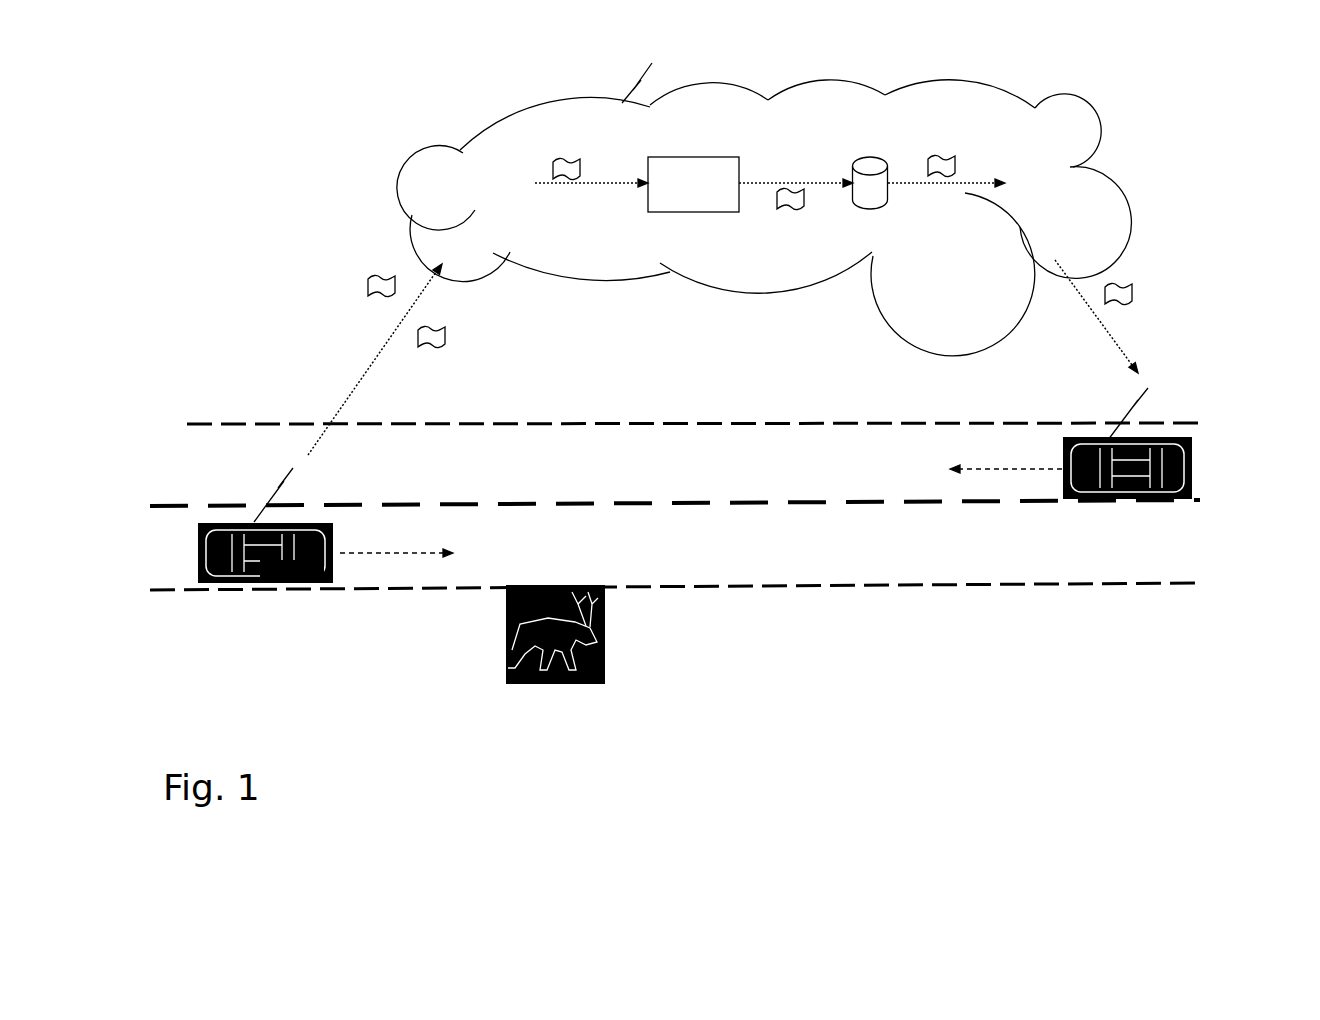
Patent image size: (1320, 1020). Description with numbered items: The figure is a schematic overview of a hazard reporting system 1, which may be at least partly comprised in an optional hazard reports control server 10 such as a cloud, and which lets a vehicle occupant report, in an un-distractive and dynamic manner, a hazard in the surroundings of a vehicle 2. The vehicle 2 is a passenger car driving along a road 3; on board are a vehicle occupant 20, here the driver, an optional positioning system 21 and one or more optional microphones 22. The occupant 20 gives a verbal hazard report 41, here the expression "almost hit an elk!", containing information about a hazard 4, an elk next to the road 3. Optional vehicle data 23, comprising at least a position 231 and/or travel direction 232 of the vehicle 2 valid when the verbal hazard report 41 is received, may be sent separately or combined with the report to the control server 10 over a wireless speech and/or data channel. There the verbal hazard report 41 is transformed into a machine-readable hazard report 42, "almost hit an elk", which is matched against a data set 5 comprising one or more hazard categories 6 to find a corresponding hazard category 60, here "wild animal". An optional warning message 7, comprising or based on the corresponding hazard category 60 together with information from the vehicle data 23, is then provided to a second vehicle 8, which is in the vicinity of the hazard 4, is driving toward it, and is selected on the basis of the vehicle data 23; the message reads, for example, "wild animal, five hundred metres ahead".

The hazard reporting system 1 is at (1135, 752).
The vehicle 2 is at (222, 585).
The road 3 is at (785, 390).
The hazard 4 is at (605, 666).
The data set 5 is at (859, 207).
The hazard categories 6 is at (867, 210).
The warning message 7 is at (1130, 290).
The second vehicle 8 is at (1108, 500).
The hazard reports control server 10 is at (395, 180).
The vehicle occupant 20 is at (303, 578).
The positioning system 21 is at (347, 608).
The position 231 is at (287, 580).
The microphones 22 is at (272, 580).
The vehicle data 23 is at (443, 330).
The verbal hazard report 41 is at (583, 162).
The machine-readable hazard report 42 is at (777, 212).
The corresponding hazard category 60 is at (955, 160).
The travel direction 232 is at (396, 540).